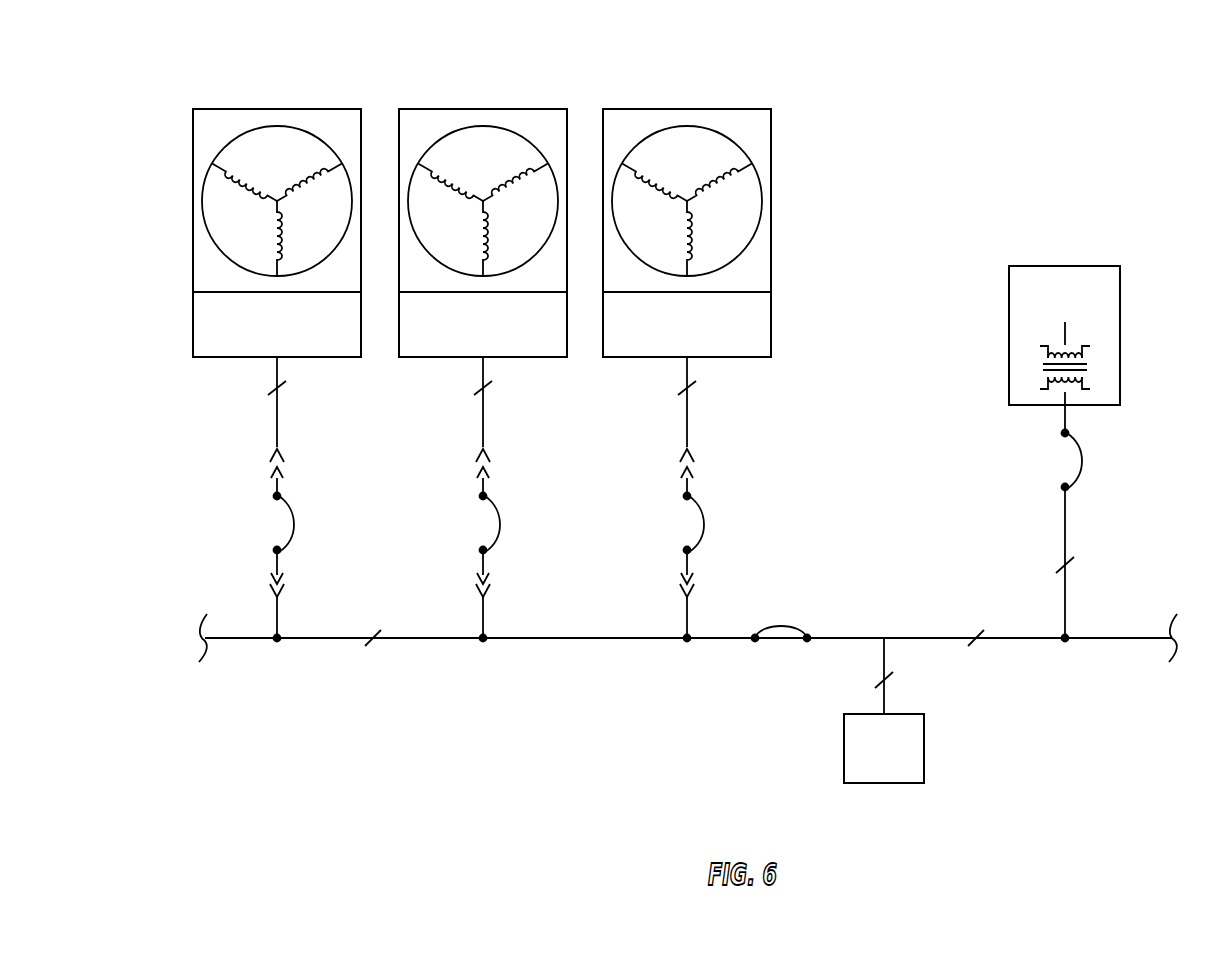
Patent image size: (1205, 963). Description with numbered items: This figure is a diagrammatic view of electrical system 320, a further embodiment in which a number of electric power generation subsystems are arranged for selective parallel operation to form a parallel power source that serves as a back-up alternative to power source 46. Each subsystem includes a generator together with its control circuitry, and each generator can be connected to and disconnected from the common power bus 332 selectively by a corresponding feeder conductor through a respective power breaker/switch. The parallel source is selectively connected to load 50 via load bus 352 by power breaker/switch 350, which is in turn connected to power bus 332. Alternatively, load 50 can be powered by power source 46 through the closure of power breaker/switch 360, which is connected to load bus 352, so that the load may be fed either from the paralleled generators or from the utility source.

The power source 46 is at (1120, 292).
The load 50 is at (844, 748).
The electrical system 320 is at (1075, 153).
The power bus 332 is at (560, 638).
The power breaker/switch 350 is at (783, 618).
The load bus 352 is at (1035, 639).
The power breaker/switch 360 is at (1088, 460).